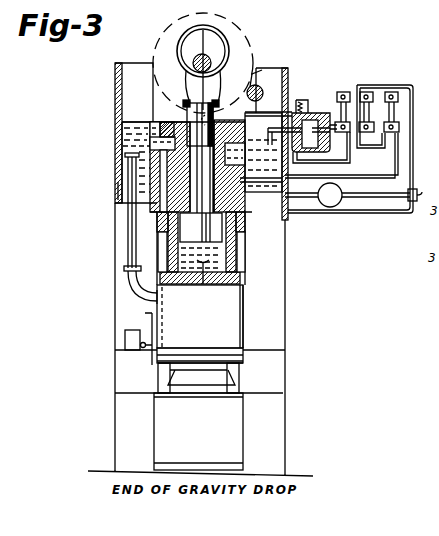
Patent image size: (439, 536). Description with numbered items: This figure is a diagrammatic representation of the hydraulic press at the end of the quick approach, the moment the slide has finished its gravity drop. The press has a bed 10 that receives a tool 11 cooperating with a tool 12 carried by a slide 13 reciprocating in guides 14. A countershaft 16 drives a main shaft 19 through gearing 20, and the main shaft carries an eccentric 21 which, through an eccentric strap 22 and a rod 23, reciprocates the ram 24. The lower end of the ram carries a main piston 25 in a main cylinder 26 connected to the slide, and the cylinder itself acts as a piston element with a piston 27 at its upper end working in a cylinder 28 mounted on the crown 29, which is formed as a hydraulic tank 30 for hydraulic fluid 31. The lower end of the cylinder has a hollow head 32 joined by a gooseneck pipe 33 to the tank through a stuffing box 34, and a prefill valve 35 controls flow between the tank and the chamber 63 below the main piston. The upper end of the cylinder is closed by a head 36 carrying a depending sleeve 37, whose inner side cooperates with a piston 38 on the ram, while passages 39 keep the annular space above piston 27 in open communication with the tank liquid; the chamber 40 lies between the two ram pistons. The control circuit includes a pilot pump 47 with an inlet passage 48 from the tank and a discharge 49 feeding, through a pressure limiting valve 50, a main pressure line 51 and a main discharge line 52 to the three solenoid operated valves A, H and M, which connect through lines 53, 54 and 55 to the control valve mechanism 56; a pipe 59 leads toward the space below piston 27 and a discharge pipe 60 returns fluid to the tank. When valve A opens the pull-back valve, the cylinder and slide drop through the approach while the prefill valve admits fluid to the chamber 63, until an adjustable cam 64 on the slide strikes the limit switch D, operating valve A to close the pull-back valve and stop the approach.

The bed 10 is at (223, 443).
The tool 11 is at (223, 390).
The tool 12 is at (232, 356).
The slide 13 is at (208, 330).
The guides 14 is at (285, 325).
The countershaft 16 is at (260, 88).
The main shaft 19 is at (214, 54).
The gearing 20 is at (262, 70).
The eccentric 21 is at (187, 52).
The eccentric strap 22 is at (230, 48).
The rod 23 is at (196, 88).
The ram 24 is at (201, 123).
The main piston 25 is at (201, 227).
The main cylinder 26 is at (232, 268).
The piston 27 is at (261, 175).
The cylinder 28 is at (248, 160).
The crown 29 is at (118, 163).
The hydraulic tank 30 is at (115, 100).
The hydraulic fluid 31 is at (120, 133).
The hollow head 32 is at (245, 305).
The gooseneck pipe 33 is at (133, 235).
The stuffing box 34 is at (115, 190).
The prefill valve 35 is at (197, 287).
The head 36 is at (163, 122).
The sleeve 37 is at (122, 146).
The piston 38 is at (186, 122).
The passages 39 is at (154, 126).
The chamber 40 is at (195, 162).
The pilot pump 47 is at (340, 203).
The inlet passage 48 is at (303, 198).
The discharge 49 is at (383, 198).
The pressure limiting valve 50 is at (418, 190).
The main pressure line 51 is at (413, 132).
The main discharge line 52 is at (365, 180).
The line 53 is at (337, 153).
The line 54 is at (332, 134).
The line 55 is at (332, 110).
The control valve mechanism 56 is at (302, 104).
The pipe 59 is at (247, 97).
The discharge pipe 60 is at (262, 120).
The chamber 63 is at (165, 250).
The adjustable cam 64 is at (135, 336).
The limit switch D is at (132, 340).
The solenoid operated valve M is at (342, 92).
The solenoid operated valve H is at (366, 92).
The solenoid operated valve A is at (391, 92).